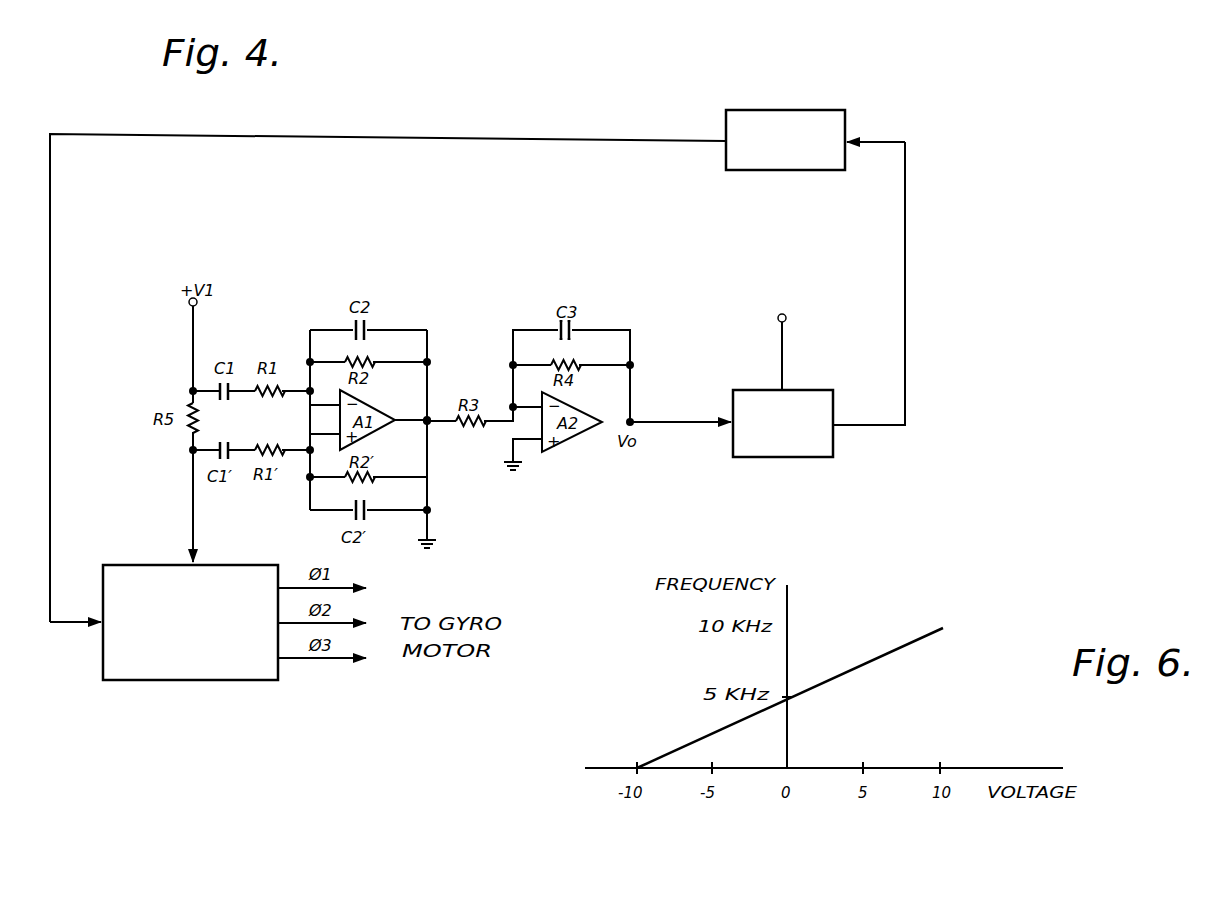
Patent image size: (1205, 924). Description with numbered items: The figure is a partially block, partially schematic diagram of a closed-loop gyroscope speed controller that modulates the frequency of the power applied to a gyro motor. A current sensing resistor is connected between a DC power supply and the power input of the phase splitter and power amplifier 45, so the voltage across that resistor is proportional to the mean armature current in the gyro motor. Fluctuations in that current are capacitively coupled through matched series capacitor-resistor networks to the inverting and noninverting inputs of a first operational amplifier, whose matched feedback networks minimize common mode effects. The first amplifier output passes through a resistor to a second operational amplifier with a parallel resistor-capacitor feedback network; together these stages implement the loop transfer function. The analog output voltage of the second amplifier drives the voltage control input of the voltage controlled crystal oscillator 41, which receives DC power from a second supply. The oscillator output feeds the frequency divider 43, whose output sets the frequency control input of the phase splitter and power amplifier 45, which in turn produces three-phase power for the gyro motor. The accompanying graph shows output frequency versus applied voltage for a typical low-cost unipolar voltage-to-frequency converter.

The voltage controlled crystal oscillator 41 is at (822, 457).
The frequency divider 43 is at (843, 110).
The phase splitter and power amplifier 45 is at (222, 680).